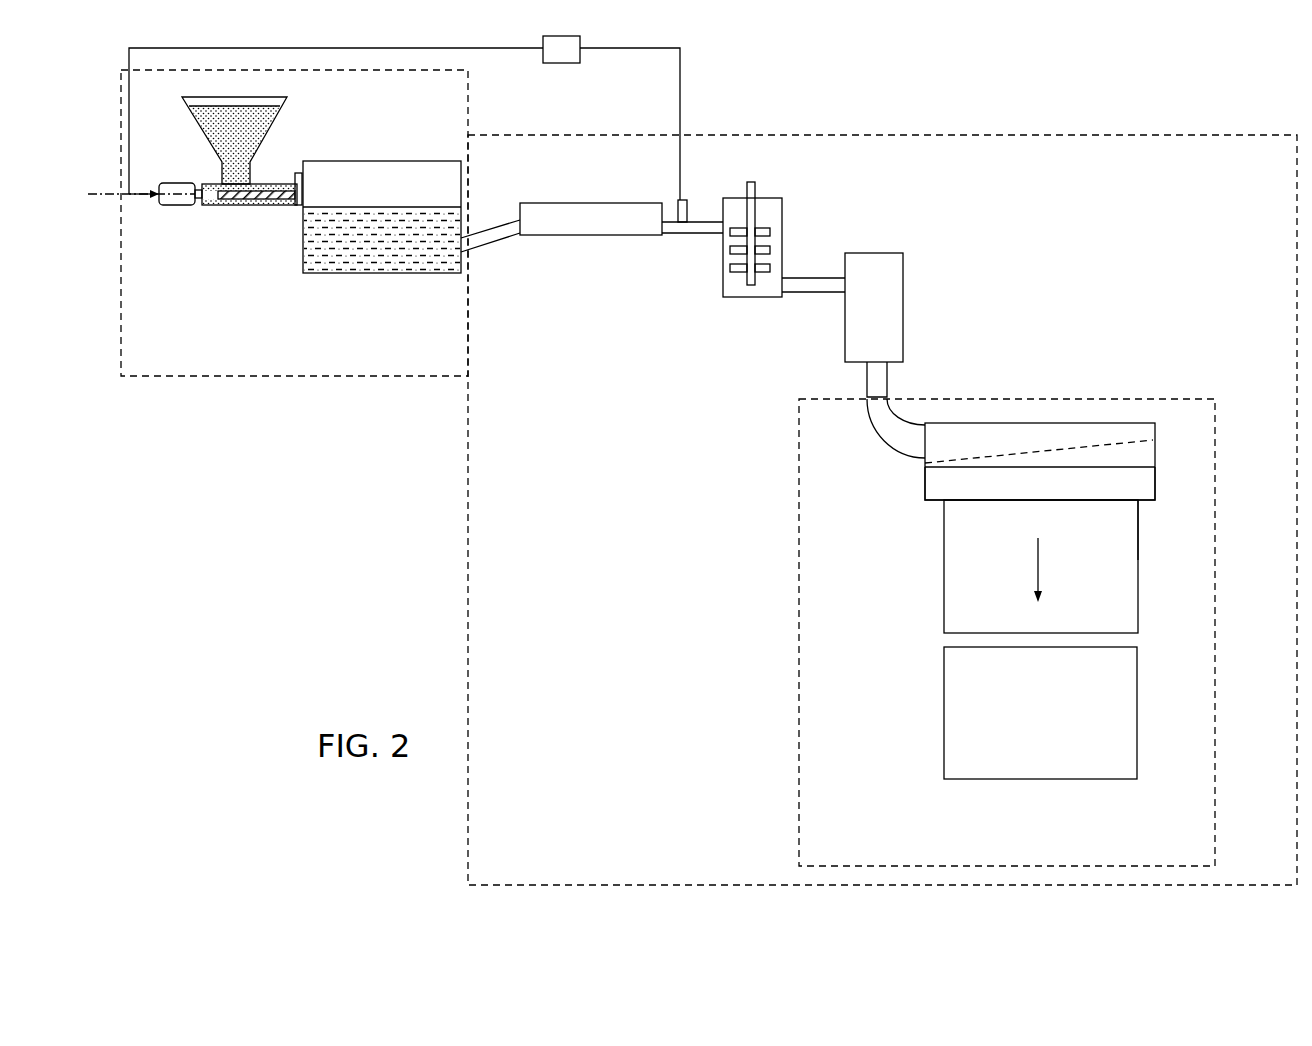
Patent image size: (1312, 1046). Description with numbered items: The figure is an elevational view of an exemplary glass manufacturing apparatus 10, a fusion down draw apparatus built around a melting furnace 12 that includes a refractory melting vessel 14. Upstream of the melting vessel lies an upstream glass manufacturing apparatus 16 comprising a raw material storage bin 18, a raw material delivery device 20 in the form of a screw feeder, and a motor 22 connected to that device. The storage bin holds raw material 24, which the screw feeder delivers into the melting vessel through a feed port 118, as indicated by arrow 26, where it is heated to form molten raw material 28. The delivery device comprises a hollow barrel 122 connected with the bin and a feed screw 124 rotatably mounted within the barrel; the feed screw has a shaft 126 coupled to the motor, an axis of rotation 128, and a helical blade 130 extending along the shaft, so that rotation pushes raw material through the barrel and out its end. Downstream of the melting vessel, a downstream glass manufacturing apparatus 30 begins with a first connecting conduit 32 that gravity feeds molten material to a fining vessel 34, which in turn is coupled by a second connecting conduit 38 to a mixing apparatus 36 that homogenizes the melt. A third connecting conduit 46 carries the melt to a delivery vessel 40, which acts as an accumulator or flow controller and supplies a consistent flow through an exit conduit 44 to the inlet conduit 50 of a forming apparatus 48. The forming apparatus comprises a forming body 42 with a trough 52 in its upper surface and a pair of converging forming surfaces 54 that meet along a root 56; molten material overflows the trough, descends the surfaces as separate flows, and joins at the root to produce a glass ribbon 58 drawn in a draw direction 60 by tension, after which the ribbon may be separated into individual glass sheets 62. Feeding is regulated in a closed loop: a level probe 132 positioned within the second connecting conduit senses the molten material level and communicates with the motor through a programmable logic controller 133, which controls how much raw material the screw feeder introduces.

The glass manufacturing apparatus 10 is at (388, 441).
The melting furnace 12 is at (318, 376).
The melting vessel 14 is at (382, 161).
The upstream glass manufacturing apparatus 16 is at (203, 236).
The raw material storage bin 18 is at (278, 116).
The raw material delivery device 20 is at (283, 220).
The motor 22 is at (172, 183).
The raw material 24 is at (250, 125).
The arrow 26 is at (324, 199).
The molten raw material 28 is at (333, 263).
The downstream glass manufacturing apparatus 30 is at (727, 134).
The first connecting conduit 32 is at (500, 240).
The fining vessel 34 is at (575, 237).
The mixing apparatus 36 is at (783, 220).
The second connecting conduit 38 is at (708, 235).
The delivery vessel 40 is at (845, 313).
The forming body 42 is at (1157, 458).
The exit conduit 44 is at (890, 378).
The third connecting conduit 46 is at (811, 294).
The forming apparatus 48 is at (1215, 603).
The inlet conduit 50 is at (887, 447).
The trough 52 is at (1090, 443).
The converging forming surfaces 54 is at (937, 487).
The root 56 is at (1122, 503).
The glass ribbon 58 is at (944, 557).
The draw direction 60 is at (1040, 577).
The glass sheets 62 is at (943, 687).
The feed port 118 is at (299, 173).
The hollow barrel 122 is at (295, 184).
The feed screw 124 is at (258, 212).
The shaft 126 is at (205, 206).
The axis of rotation 128 is at (105, 200).
The helical blade 130 is at (225, 205).
The level probe 132 is at (687, 208).
The programmable logic controller 133 is at (563, 64).